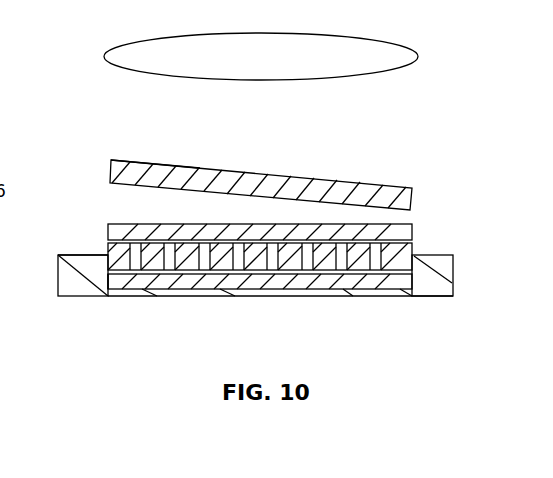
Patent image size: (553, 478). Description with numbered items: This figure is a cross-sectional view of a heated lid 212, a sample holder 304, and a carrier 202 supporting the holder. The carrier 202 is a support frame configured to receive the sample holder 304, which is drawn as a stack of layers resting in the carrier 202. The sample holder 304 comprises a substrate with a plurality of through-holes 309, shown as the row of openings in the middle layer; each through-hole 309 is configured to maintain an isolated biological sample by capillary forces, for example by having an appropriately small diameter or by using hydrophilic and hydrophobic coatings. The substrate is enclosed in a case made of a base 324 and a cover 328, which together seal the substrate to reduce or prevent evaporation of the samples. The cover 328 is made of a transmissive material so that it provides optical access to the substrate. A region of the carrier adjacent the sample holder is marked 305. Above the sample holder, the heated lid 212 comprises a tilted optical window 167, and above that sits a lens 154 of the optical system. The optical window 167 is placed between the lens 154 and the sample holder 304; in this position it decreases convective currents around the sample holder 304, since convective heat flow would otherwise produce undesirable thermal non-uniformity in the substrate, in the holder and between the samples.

The lens 154 is at (317, 34).
The heated lid 212 is at (160, 158).
The optical window 167 is at (300, 177).
The cover 328 is at (108, 232).
The through-holes 309 is at (240, 262).
The sample holder 304 is at (140, 293).
The base 324 is at (107, 278).
The frame 305 is at (108, 255).
The carrier 202 is at (365, 297).